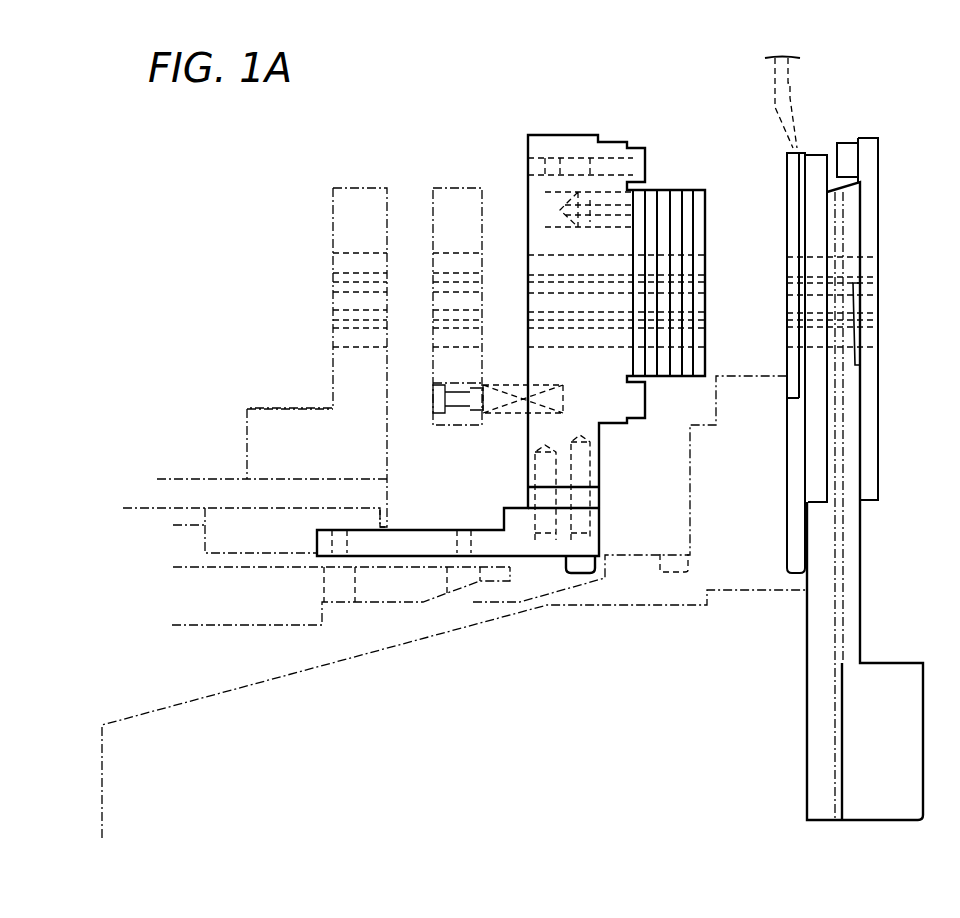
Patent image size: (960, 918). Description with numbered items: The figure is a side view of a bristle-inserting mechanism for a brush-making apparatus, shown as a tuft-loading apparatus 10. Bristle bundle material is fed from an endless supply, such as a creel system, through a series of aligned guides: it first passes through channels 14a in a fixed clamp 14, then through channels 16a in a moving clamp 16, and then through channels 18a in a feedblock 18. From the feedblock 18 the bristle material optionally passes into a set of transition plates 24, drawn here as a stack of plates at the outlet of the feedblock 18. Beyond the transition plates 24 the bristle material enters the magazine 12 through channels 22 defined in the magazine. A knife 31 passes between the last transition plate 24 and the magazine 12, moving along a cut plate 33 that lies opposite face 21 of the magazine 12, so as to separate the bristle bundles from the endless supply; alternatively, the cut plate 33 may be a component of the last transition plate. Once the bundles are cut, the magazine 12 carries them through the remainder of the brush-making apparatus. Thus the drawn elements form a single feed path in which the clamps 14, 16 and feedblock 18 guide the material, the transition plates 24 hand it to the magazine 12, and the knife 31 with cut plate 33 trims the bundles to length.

The tuft-loading apparatus 10 is at (373, 732).
The magazine 12 is at (806, 705).
The fixed clamp 14 is at (333, 261).
The channels 14a is at (333, 335).
The moving clamp 16 is at (433, 215).
The channels 16a is at (433, 335).
The feedblock 18 is at (528, 145).
The channels 18a is at (528, 335).
The face 21 is at (878, 418).
The channels 22 is at (878, 265).
The transition plates 24 is at (677, 184).
The knife 31 is at (795, 84).
The cut plate 33 is at (817, 155).